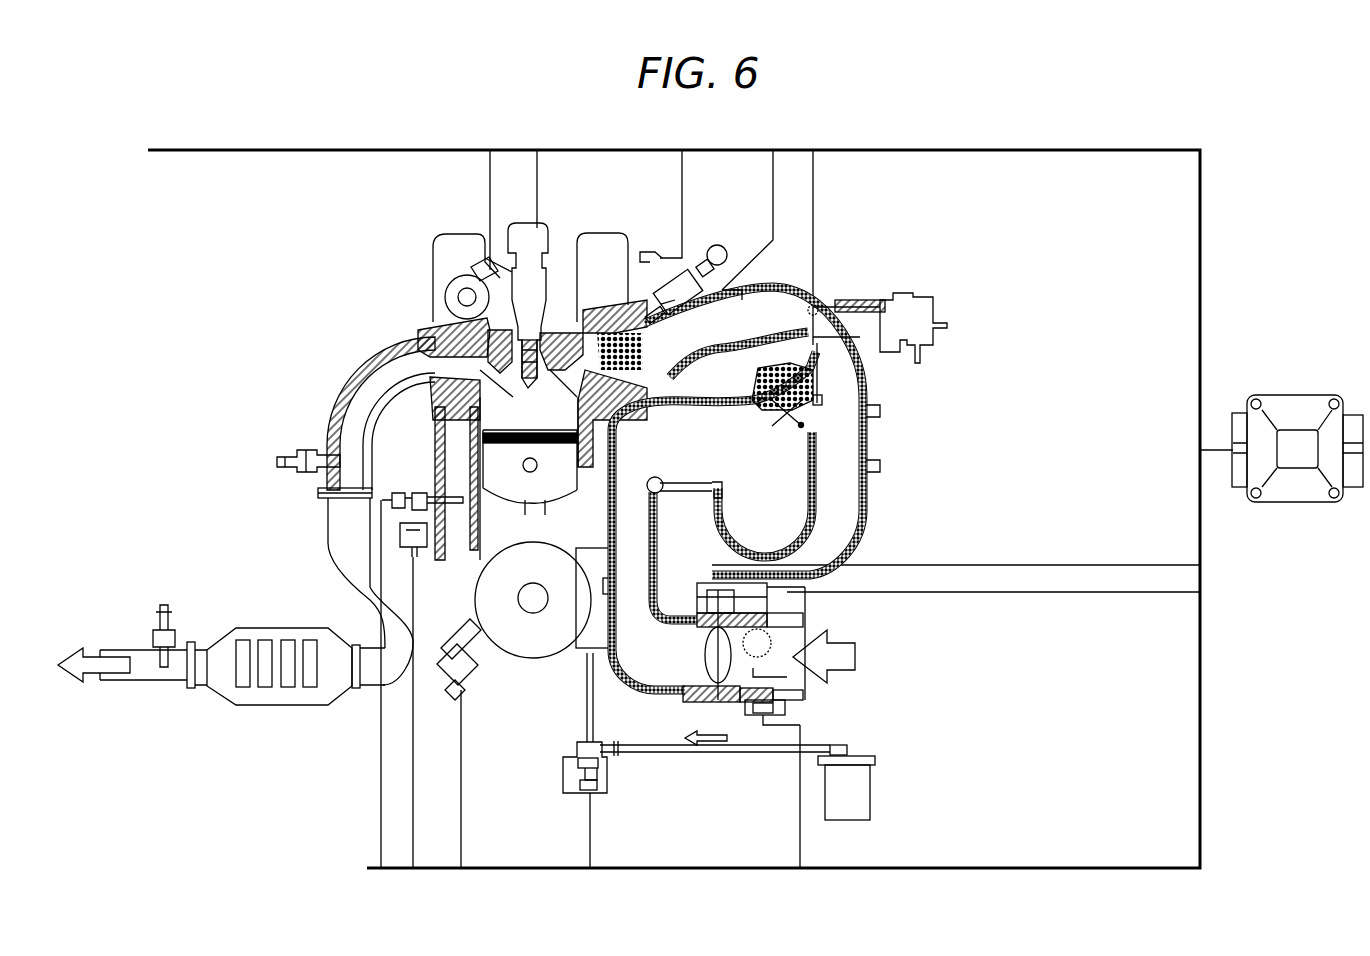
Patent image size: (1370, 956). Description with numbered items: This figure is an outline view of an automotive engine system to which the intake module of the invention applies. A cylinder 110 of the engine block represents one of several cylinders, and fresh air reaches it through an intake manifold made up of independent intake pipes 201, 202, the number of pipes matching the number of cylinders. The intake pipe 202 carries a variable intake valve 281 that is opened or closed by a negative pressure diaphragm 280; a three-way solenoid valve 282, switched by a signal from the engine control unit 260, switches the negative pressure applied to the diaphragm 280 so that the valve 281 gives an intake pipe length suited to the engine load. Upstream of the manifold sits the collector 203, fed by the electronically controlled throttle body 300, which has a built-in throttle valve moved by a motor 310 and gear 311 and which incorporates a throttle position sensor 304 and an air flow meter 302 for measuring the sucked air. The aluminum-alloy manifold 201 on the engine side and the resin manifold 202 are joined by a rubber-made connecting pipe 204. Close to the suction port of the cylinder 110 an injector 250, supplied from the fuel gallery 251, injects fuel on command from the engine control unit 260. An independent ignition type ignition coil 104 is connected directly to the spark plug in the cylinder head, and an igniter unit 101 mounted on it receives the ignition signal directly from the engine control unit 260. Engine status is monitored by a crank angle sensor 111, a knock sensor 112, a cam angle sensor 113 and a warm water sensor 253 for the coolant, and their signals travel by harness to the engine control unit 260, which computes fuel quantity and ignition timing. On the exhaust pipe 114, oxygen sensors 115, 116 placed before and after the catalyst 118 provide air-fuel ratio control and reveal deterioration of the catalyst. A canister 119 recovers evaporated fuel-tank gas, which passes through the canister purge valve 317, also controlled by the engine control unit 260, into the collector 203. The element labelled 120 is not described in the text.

The igniter unit 101 is at (539, 228).
The independent ignition type ignition coil 104 is at (546, 280).
The cylinder 110 is at (432, 460).
The crank angle sensor 111 is at (468, 662).
The knock sensor 112 is at (418, 548).
The cam angle sensor 113 is at (477, 260).
The exhaust pipe 114 is at (343, 382).
The oxygen sensor 115 is at (297, 470).
The oxygen sensor 116 is at (178, 615).
The catalyst 118 is at (273, 695).
The canister 119 is at (860, 753).
The camshaft 120 is at (452, 297).
The independent intake pipe 201 is at (672, 368).
The independent intake pipe 202 is at (867, 432).
The collector 203 is at (770, 480).
The rubber-made connecting pipe 204 is at (738, 279).
The injector 250 is at (690, 267).
The fuel gallery 251 is at (721, 245).
The warm water sensor 253 is at (418, 489).
The engine control unit 260 is at (1302, 397).
The negative pressure diaphragm 280 is at (815, 306).
The variable intake valve 281 is at (818, 428).
The three-way solenoid valve 282 is at (920, 293).
The electronically controlled throttle body 300 is at (803, 697).
The air flow meter 302 is at (748, 713).
The throttle position sensor 304 is at (707, 601).
The motor 310 is at (763, 640).
The gear 311 is at (792, 601).
The canister purge valve 317 is at (608, 790).